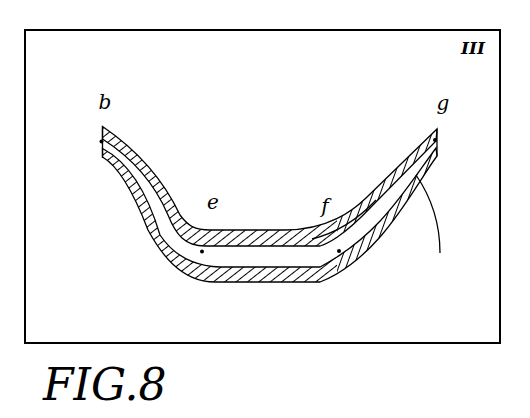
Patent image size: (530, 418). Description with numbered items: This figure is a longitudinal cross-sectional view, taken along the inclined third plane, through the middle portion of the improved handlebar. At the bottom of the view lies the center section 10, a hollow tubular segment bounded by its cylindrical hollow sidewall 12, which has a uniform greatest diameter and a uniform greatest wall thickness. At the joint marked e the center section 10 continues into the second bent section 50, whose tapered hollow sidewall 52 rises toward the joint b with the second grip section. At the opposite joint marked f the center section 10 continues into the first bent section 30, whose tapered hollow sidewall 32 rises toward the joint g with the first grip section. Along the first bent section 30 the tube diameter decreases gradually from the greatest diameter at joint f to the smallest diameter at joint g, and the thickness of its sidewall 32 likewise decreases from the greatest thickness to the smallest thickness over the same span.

The center section 10 is at (255, 228).
The cylindrical hollow sidewall 12 is at (293, 230).
The first bent section 30 is at (365, 194).
The tapered hollow sidewall 32 is at (405, 155).
The second bent section 50 is at (152, 168).
The tapered hollow sidewall 52 is at (163, 193).